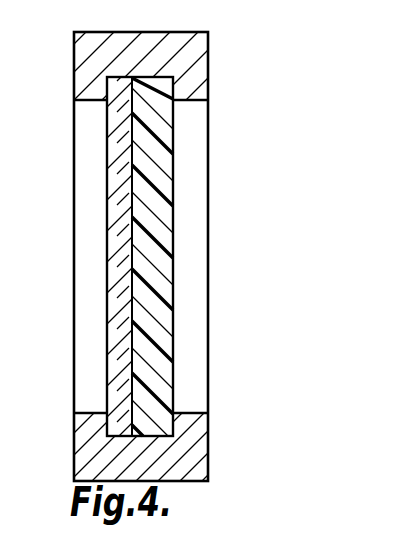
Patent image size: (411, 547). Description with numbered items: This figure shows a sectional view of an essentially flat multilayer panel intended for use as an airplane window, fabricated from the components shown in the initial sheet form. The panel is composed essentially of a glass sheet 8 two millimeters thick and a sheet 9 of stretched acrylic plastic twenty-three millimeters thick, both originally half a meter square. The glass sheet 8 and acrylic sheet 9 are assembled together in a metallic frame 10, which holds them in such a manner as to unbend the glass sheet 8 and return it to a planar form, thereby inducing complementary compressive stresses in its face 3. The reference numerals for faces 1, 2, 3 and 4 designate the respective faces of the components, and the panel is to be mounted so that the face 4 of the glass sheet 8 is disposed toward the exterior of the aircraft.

The face 1 is at (0, 137).
The face 2 is at (133, 76).
The face 3 is at (132, 76).
The face 4 is at (107, 179).
The glass sheet 8 is at (118, 330).
The sheet of stretched acrylic plastic 9 is at (143, 322).
The metallic frame 10 is at (96, 68).